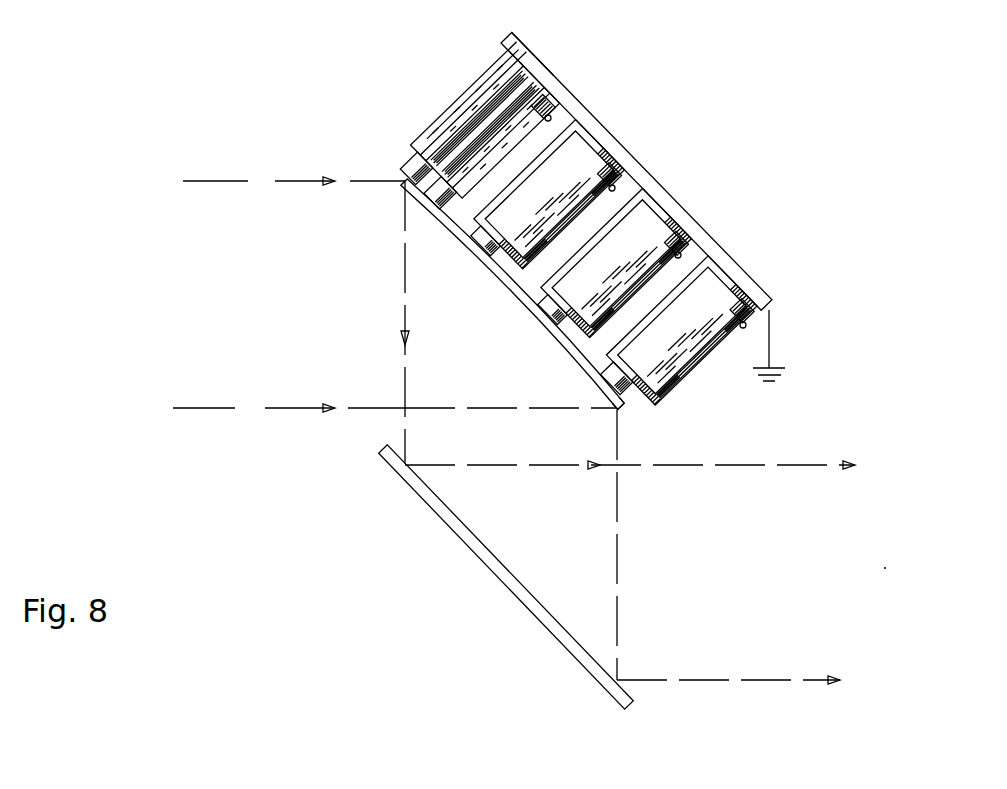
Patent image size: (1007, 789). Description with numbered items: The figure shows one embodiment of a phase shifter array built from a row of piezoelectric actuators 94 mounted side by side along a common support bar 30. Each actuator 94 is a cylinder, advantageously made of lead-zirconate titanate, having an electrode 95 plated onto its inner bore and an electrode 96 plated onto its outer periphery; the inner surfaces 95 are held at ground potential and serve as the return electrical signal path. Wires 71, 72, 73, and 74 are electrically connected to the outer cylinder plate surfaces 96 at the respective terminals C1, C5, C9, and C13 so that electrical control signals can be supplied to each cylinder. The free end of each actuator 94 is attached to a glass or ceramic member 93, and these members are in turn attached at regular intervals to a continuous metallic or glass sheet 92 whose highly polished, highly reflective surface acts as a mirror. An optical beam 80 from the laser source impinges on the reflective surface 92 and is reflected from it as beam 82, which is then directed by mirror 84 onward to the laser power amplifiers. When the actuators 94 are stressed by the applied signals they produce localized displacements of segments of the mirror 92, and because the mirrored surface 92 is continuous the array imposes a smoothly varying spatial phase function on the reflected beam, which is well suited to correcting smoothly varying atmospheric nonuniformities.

The support bar 30 is at (595, 146).
The wire 71 is at (589, 103).
The wire 72 is at (662, 172).
The wire 73 is at (725, 240).
The wire 74 is at (797, 312).
The optical beam 80 is at (230, 180).
The reflected beam 82 is at (228, 404).
The mirror 84 is at (522, 603).
The continuous metallic or glass sheet 92 is at (524, 306).
The glass or ceramic member 93 is at (628, 410).
The piezoelectric actuator 94 is at (452, 144).
The inner electrode 95 is at (523, 68).
The outer electrode 96 is at (490, 64).
The capacitor terminal C1 is at (551, 118).
The capacitor terminal C5 is at (615, 188).
The capacitor terminal C9 is at (681, 255).
The capacitor terminal C13 is at (746, 326).